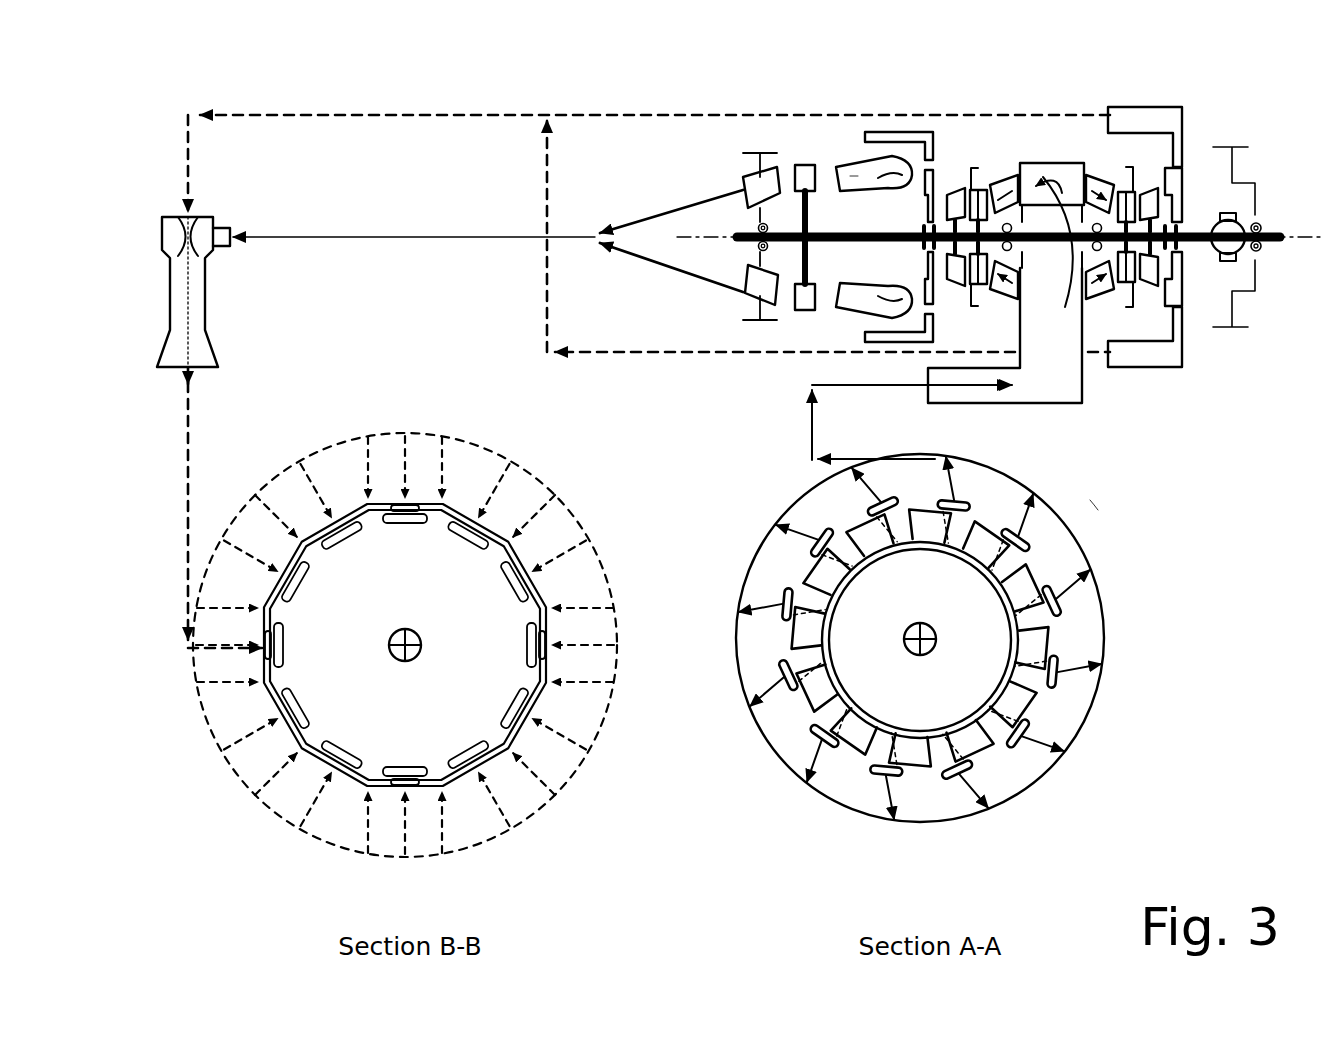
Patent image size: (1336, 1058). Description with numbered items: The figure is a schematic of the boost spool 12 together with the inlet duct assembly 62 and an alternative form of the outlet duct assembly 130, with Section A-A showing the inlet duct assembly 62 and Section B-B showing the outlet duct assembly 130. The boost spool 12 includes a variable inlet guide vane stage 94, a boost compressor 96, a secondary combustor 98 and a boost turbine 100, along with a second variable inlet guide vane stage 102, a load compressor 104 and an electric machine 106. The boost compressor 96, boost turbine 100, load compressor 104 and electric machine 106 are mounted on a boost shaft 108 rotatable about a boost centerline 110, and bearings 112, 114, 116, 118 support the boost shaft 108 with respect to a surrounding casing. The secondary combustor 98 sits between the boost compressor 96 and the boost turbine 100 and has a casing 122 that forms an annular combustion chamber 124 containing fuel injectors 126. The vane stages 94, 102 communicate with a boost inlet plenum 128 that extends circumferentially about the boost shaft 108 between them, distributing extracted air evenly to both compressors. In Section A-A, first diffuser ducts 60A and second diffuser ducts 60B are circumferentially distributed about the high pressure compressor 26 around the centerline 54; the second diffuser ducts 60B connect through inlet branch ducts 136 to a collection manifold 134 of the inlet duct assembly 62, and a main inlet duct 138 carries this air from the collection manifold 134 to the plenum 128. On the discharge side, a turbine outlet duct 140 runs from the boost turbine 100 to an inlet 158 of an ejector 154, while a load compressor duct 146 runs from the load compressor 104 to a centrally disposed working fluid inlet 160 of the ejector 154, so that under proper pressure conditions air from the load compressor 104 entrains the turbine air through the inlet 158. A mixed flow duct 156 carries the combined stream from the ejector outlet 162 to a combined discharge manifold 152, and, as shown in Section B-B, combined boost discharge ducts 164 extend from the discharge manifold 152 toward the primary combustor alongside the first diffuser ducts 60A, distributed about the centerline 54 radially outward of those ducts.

The boost spool 12 is at (1277, 108).
The high pressure compressor 26 is at (868, 578).
The centerline 54 is at (415, 635).
The first diffuser ducts 60A is at (460, 542).
The second diffuser ducts 60B is at (830, 610).
The inlet duct assembly 62 is at (1095, 498).
The variable inlet guide vane stage 94 is at (978, 188).
The boost compressor 96 is at (951, 183).
The secondary combustor 98 is at (852, 158).
The boost turbine 100 is at (806, 158).
The variable inlet guide vane stage 102 is at (1126, 188).
The load compressor 104 is at (1190, 170).
The electric machine 106 is at (1240, 222).
The boost shaft 108 is at (748, 232).
The boost centerline 110 is at (1308, 233).
The bearing 112 is at (757, 247).
The bearing 114 is at (1000, 270).
The bearing 116 is at (1098, 270).
The bearing 118 is at (1264, 250).
The casing 122 is at (895, 185).
The annular combustion chamber 124 is at (840, 182).
The injectors 126 is at (893, 158).
The boost inlet plenum 128 is at (1052, 162).
The outlet duct assembly 130 is at (165, 512).
The collection manifold 134 is at (1085, 540).
The inlet branch ducts 136 is at (790, 532).
The main inlet duct 138 is at (812, 425).
The turbine outlet duct 140 is at (355, 235).
The load compressor duct 146 is at (185, 162).
The combined discharge manifold 152 is at (440, 432).
The ejector 154 is at (170, 300).
The mixed flow duct 156 is at (186, 412).
The inlet 158 is at (235, 245).
The working fluid inlet 160 is at (195, 208).
The outlet 162 is at (205, 368).
The combined boost discharge ducts 164 is at (470, 470).